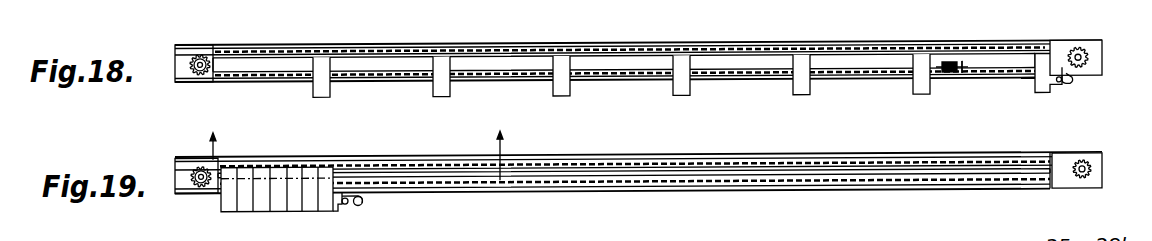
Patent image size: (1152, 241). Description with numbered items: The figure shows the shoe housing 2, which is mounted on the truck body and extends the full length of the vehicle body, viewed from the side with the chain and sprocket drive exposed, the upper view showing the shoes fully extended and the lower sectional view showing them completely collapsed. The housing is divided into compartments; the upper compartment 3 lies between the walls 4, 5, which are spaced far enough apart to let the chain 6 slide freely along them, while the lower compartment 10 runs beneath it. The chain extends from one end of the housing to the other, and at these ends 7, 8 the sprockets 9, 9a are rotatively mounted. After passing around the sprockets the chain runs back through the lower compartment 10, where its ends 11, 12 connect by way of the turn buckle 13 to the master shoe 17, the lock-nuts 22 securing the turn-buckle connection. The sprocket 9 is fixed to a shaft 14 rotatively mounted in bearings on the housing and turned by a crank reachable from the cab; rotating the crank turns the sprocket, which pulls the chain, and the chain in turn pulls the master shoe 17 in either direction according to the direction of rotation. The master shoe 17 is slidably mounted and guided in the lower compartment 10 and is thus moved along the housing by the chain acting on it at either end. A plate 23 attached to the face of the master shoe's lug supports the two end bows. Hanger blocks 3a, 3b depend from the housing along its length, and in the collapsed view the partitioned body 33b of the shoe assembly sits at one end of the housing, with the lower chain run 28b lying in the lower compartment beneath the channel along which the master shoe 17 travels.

In FIG. 18, the shoe housing 2 is at (455, 44).
In FIG. 19, the shoe housing 2 is at (562, 156).
In FIG. 18, the upper compartment 3 is at (692, 47).
In FIG. 19, the upper compartment 3 is at (697, 157).
In FIG. 18, the end hanger block 3a is at (1053, 62).
In FIG. 18, the hanger block 3b is at (807, 89).
In FIG. 18, the wall 4 is at (760, 41).
In FIG. 19, the wall 4 is at (757, 157).
In FIG. 18, the wall 5 is at (790, 53).
In FIG. 19, the wall 5 is at (768, 165).
In FIG. 18, the chain 6 is at (847, 44).
In FIG. 19, the chain 6 is at (820, 163).
In FIG. 18, the end of shoe housing 7 is at (180, 58).
In FIG. 19, the end of shoe housing 7 is at (186, 170).
In FIG. 18, the end of shoe housing 8 is at (1088, 46).
In FIG. 19, the end of shoe housing 8 is at (1098, 156).
In FIG. 18, the sprocket 9 is at (197, 75).
In FIG. 18, the sprocket 9a is at (1087, 66).
In FIG. 18, the lower compartment 10 is at (735, 72).
In FIG. 19, the lower compartment 10 is at (817, 177).
In FIG. 18, the chain end 11 is at (945, 74).
In FIG. 18, the chain end 12 is at (1076, 76).
In FIG. 18, the turn buckle 13 is at (953, 72).
In FIG. 18, the shaft 14 is at (197, 67).
In FIG. 19, the shaft 14 is at (197, 185).
In FIG. 18, the master shoe 17 is at (920, 85).
In FIG. 19, the master shoe 17 is at (327, 183).
In FIG. 19, the lock-nuts 22 is at (359, 147).
In FIG. 18, the plate 23 is at (1053, 90).
In FIG. 19, the plate 23 is at (350, 204).
In FIG. 18, the lower chain 28b is at (887, 58).
In FIG. 19, the lower chain 28b is at (928, 166).
In FIG. 19, the carriage partitions 33b is at (310, 205).